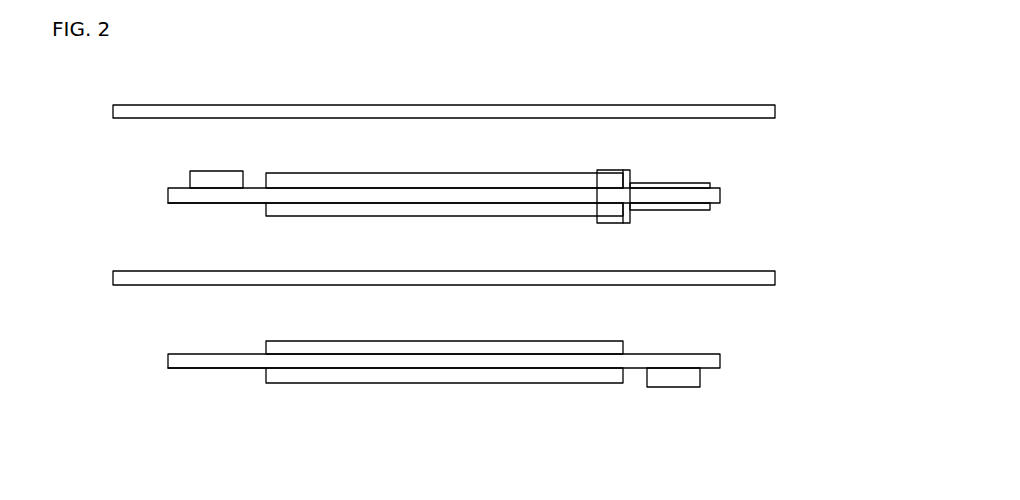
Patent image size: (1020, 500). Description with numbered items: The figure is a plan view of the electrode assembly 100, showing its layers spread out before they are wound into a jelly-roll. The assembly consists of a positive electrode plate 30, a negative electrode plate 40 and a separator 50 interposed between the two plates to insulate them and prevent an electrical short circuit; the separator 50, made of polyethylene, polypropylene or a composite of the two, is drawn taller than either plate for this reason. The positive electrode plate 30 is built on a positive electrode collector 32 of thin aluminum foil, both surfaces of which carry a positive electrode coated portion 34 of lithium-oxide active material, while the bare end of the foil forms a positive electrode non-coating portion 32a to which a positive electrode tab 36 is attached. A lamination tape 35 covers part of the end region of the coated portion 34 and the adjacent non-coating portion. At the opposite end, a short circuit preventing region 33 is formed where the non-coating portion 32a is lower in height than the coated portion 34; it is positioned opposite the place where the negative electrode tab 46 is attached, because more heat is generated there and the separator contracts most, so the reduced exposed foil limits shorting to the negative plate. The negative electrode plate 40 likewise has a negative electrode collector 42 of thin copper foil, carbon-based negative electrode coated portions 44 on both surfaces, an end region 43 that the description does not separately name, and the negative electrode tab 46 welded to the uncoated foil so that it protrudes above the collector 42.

The electrode assembly 100 is at (113, 93).
The separator 50 is at (777, 112).
The positive electrode plate 30 is at (775, 170).
The positive electrode collector 32 is at (722, 196).
The positive electrode non-coating portions 32a is at (211, 208).
The short circuit preventing region 33 is at (696, 204).
The positive electrode coated portion 34 is at (612, 170).
The lamination tape 35 is at (654, 208).
The positive electrode tab 36 is at (190, 177).
The negative electrode plate 40 is at (820, 387).
The negative electrode collector 42 is at (722, 361).
The exposed portion of second substrate 43 is at (213, 368).
The negative electrode coated portions 44 is at (608, 342).
The negative electrode tab 46 is at (700, 375).